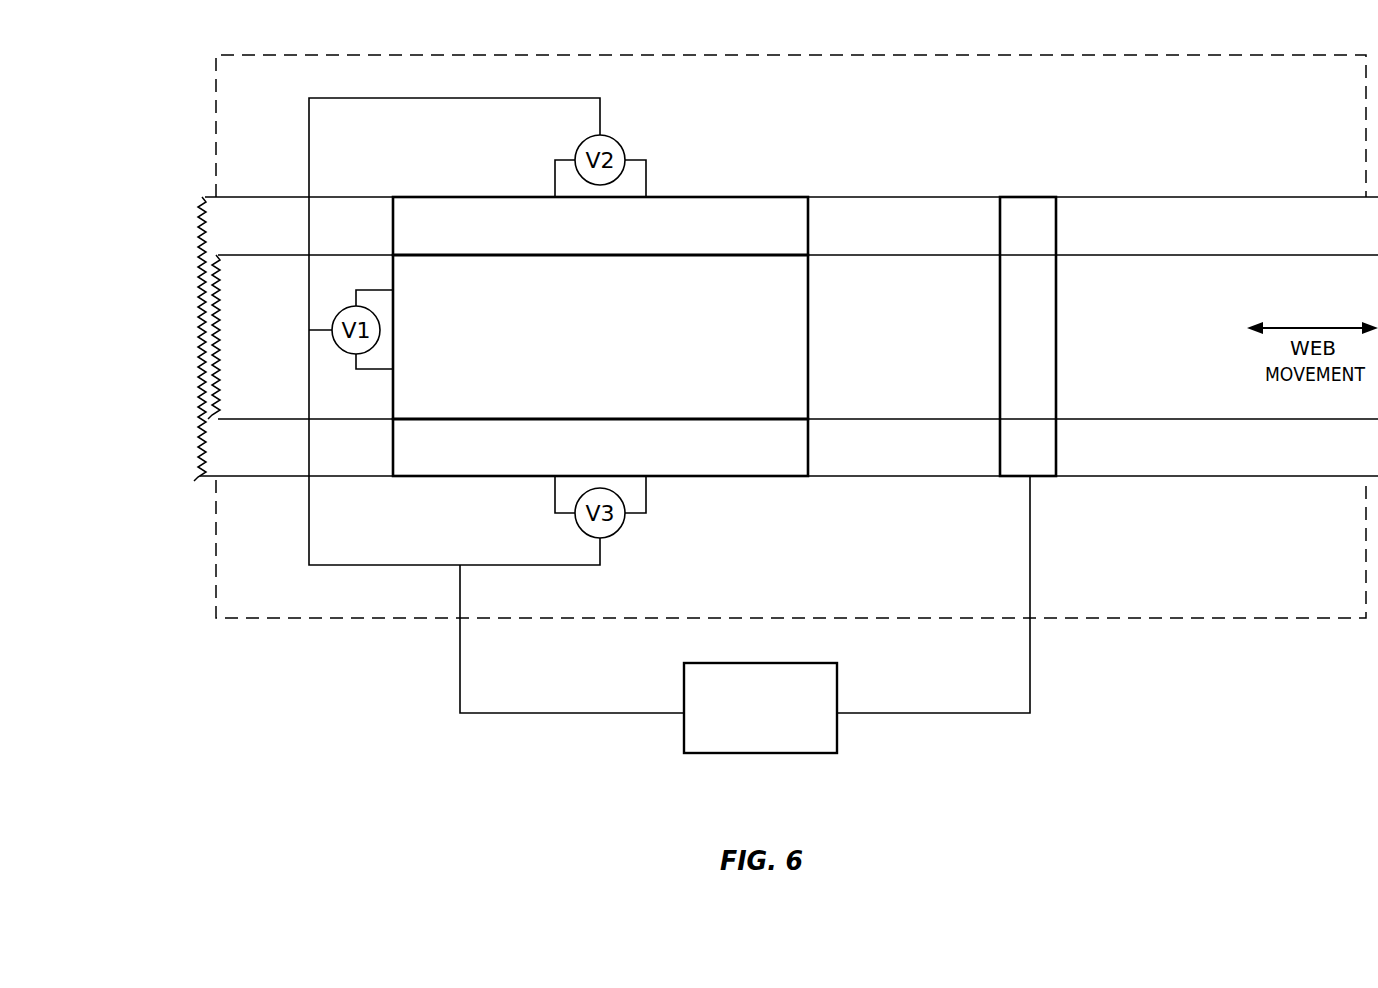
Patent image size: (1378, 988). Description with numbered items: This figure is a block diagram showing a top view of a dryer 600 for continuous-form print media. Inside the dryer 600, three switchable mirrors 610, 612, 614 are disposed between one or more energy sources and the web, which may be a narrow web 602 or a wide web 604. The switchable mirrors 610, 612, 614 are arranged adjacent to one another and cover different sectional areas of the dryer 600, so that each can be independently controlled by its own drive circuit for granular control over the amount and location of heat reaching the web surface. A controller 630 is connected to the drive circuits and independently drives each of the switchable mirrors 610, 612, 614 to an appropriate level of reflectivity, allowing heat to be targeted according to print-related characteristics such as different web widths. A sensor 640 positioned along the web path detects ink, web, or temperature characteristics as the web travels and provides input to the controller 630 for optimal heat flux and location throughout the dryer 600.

The dryer 600 is at (1160, 55).
The narrow web 602 is at (237, 278).
The wide web 604 is at (223, 443).
The switchable mirror 610 is at (620, 321).
The switchable mirror 612 is at (620, 470).
The switchable mirror 614 is at (620, 248).
The controller 630 is at (744, 740).
The sensor 640 is at (1037, 210).